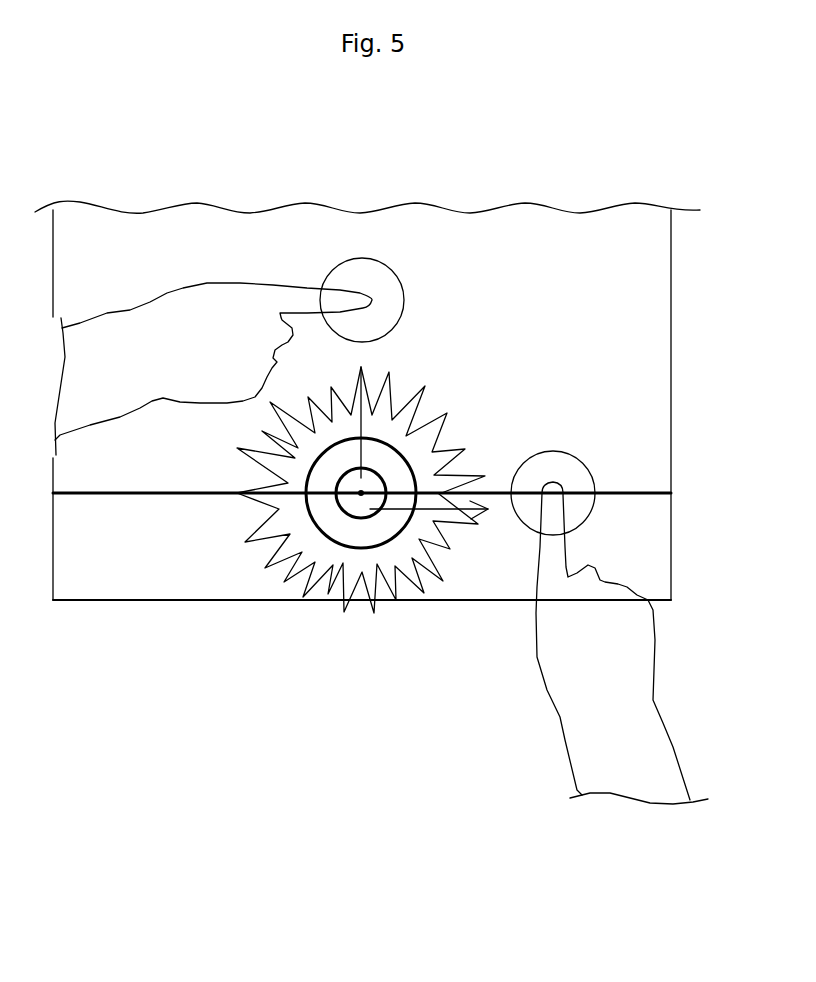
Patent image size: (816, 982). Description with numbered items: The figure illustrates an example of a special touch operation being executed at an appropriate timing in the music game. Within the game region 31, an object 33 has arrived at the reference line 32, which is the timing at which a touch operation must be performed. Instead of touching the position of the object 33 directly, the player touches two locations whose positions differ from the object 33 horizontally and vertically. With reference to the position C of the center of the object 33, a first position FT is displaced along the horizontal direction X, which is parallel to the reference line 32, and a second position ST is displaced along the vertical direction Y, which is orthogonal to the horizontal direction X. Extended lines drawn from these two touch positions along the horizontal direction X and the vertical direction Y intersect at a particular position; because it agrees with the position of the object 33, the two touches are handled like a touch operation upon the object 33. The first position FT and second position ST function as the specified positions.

The game region 31 is at (673, 310).
The reference line 32 is at (652, 491).
The object 33 is at (398, 453).
The position of the center of the object C is at (361, 493).
The horizontal direction X is at (443, 497).
The vertical direction Y is at (380, 402).
The second position ST is at (405, 297).
The first position FT is at (584, 462).